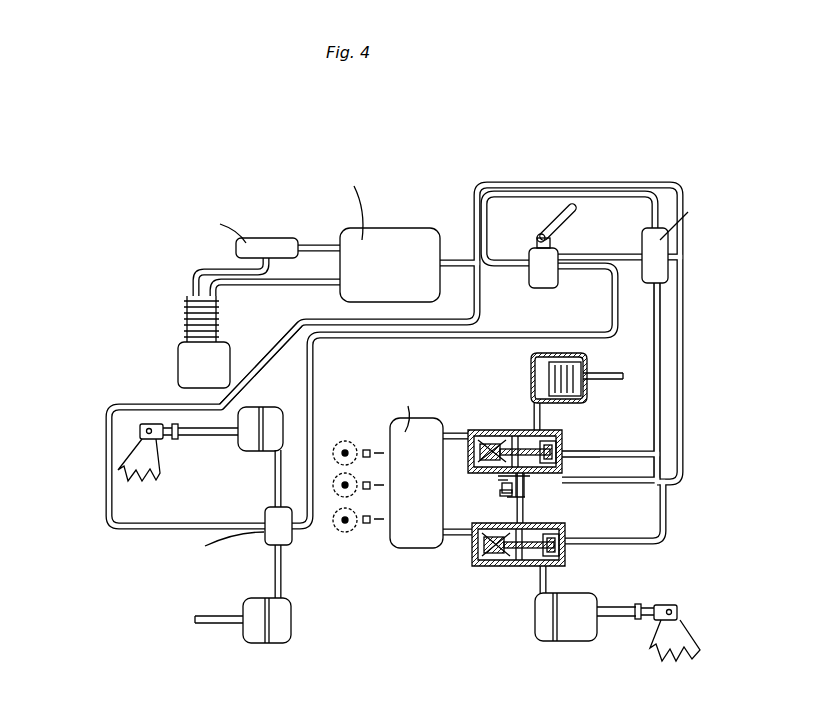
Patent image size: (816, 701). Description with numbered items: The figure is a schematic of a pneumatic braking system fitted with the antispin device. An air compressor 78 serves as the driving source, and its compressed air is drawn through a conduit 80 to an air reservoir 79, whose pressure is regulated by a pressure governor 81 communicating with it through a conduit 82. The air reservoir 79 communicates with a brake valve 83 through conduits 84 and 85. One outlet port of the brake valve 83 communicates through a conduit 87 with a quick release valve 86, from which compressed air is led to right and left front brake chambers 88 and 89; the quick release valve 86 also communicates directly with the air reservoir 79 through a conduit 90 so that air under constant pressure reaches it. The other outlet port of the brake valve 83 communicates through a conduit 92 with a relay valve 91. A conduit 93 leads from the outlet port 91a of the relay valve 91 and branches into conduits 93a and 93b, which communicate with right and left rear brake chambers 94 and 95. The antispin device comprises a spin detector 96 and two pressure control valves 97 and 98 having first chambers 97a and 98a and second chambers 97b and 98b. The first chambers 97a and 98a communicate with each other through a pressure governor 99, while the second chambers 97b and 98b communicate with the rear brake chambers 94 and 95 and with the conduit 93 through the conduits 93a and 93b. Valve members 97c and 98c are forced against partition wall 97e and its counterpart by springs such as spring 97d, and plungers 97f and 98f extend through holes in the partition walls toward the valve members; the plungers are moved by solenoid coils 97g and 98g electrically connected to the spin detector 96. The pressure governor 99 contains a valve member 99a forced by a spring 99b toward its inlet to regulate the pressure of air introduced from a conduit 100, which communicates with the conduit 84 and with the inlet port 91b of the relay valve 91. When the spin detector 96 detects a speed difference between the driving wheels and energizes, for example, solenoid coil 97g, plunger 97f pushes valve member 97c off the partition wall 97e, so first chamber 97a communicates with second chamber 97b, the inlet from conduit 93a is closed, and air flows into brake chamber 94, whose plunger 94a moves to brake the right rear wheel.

The air compressor 78 is at (185, 318).
The air reservoir 79 is at (400, 240).
The conduit 80 is at (272, 286).
The pressure governor 81 is at (270, 240).
The conduit 82 is at (318, 245).
The brake valve 83 is at (545, 288).
The conduit 84 is at (455, 259).
The conduit 85 is at (497, 258).
The quick release valve 86 is at (293, 536).
The conduit 87 is at (410, 339).
The right front brake chamber 88 is at (251, 455).
The left front brake chamber 89 is at (292, 629).
The conduit 90 is at (263, 365).
The relay valve 91 is at (642, 238).
The outlet port 91a is at (662, 300).
The inlet port 91b is at (672, 265).
The conduit 92 is at (593, 252).
The conduit 93 is at (654, 345).
The conduit 93a is at (650, 452).
The conduit 93b is at (660, 548).
The right rear brake chamber 94 is at (530, 362).
The plunger 94a is at (600, 372).
The left rear brake chamber 95 is at (576, 641).
The spin detector 96 is at (342, 561).
The pressure control valve 97 is at (524, 434).
The first chamber 97a is at (512, 440).
The second chamber 97b is at (560, 450).
The valve member 97c is at (554, 470).
The spring 97d is at (560, 462).
The partition wall 97e is at (556, 440).
The plunger 97f is at (500, 433).
The solenoid coil 97g is at (478, 437).
The pressure control valve 98 is at (490, 563).
The first chamber 98a is at (520, 567).
The second chamber 98b is at (560, 564).
The valve member 98c is at (526, 480).
The plunger 98f is at (500, 562).
The solenoid coil 98g is at (478, 564).
The pressure governor 99 is at (465, 473).
The valve member 99a is at (478, 480).
The spring 99b is at (505, 491).
The conduit 100 is at (576, 186).